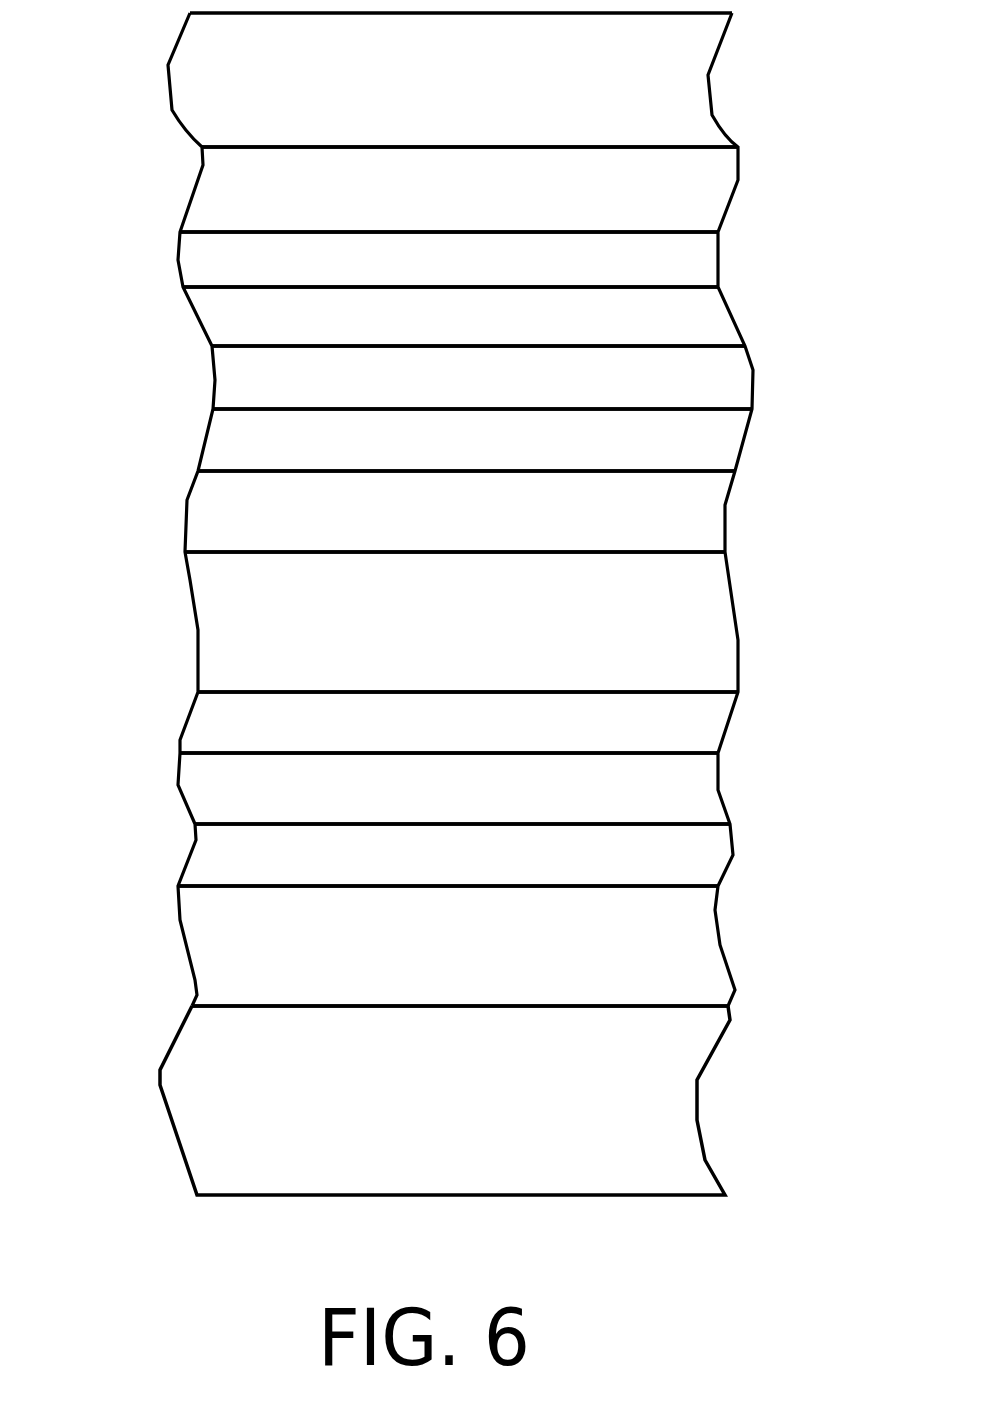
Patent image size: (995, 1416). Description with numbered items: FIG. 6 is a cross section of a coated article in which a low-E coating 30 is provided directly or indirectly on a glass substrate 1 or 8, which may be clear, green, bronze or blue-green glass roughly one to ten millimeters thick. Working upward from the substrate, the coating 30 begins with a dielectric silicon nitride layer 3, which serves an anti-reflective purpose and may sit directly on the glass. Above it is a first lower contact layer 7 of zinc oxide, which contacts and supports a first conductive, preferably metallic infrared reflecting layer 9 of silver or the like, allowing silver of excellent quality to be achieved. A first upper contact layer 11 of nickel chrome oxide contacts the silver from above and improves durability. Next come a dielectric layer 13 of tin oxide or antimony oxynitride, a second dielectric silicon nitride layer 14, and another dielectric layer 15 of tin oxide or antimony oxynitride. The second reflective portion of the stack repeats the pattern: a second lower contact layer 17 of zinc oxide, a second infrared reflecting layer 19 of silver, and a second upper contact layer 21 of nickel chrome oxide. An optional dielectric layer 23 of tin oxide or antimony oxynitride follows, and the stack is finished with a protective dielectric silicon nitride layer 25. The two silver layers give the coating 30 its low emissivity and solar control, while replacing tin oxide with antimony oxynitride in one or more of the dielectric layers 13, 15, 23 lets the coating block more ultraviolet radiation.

The substrate 1 is at (514, 1100).
The glass substrate 8 is at (667, 1105).
The dielectric silicon nitride layer 3 is at (693, 945).
The first lower contact layer 7 is at (712, 853).
The first infrared reflecting layer 9 is at (693, 790).
The first upper contact layer 11 is at (707, 725).
The dielectric layer 13 is at (707, 625).
The dielectric silicon nitride layer 14 is at (698, 525).
The dielectric layer 15 is at (722, 447).
The second lower contact layer 17 is at (722, 384).
The second infrared reflecting layer 19 is at (698, 316).
The second upper contact layer 21 is at (683, 255).
The dielectric layer 23 is at (708, 183).
The protective dielectric layer 25 is at (677, 60).
The low-E coating 30 is at (140, 13).